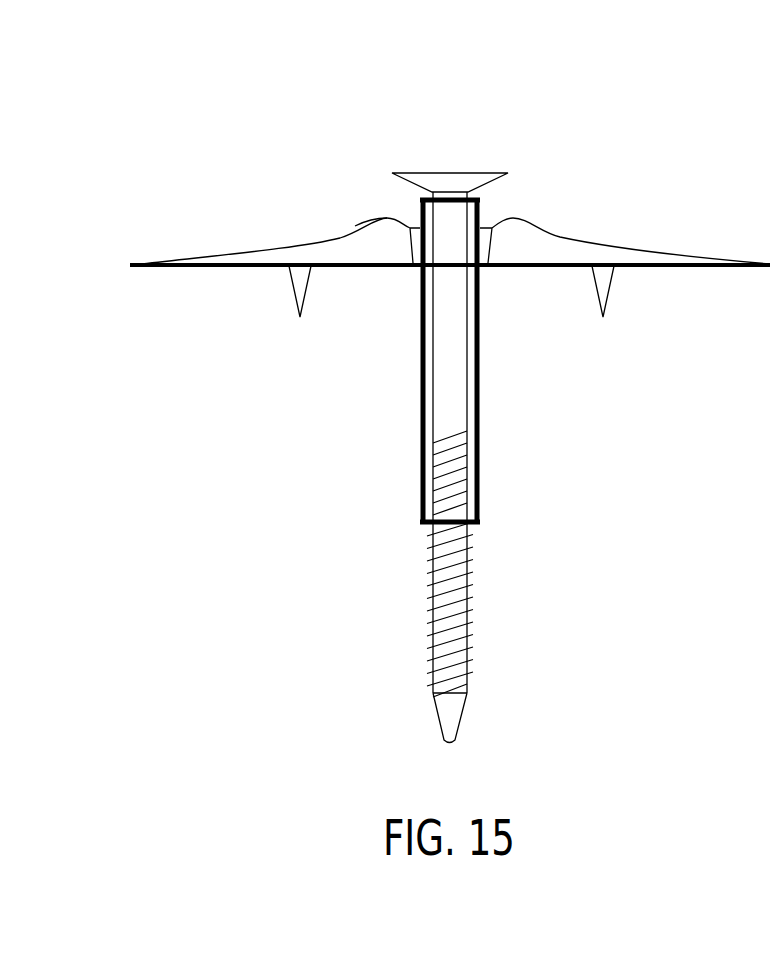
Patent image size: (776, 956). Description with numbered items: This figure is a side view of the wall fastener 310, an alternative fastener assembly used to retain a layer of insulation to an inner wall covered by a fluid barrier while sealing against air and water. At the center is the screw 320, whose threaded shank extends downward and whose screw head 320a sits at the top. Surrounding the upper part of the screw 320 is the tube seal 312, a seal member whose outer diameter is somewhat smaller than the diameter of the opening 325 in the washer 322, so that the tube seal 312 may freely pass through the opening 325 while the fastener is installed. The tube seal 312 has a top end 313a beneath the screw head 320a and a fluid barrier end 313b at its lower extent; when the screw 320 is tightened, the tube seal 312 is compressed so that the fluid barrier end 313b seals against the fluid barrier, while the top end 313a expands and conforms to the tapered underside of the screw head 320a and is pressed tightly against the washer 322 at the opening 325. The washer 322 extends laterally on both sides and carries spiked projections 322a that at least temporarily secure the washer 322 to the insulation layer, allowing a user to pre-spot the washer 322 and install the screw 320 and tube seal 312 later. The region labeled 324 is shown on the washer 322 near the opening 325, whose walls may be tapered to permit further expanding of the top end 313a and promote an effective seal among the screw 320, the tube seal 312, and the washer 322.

The wall fastener 310 is at (206, 168).
The tube seal 312 is at (423, 402).
The top end 313a is at (482, 205).
The fluid barrier end 313b is at (423, 517).
The screw 320 is at (432, 655).
The screw head 320a is at (447, 186).
The washer 322 is at (216, 262).
The spiked projections 322a is at (297, 296).
The raised portion of flashing 324 is at (360, 212).
The opening 325 is at (488, 274).